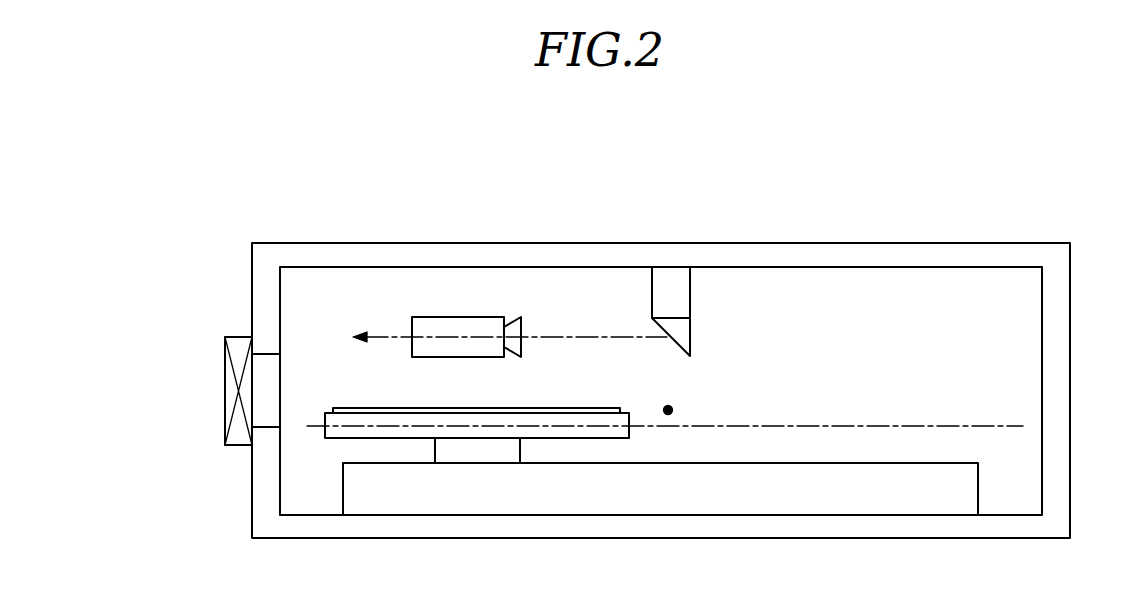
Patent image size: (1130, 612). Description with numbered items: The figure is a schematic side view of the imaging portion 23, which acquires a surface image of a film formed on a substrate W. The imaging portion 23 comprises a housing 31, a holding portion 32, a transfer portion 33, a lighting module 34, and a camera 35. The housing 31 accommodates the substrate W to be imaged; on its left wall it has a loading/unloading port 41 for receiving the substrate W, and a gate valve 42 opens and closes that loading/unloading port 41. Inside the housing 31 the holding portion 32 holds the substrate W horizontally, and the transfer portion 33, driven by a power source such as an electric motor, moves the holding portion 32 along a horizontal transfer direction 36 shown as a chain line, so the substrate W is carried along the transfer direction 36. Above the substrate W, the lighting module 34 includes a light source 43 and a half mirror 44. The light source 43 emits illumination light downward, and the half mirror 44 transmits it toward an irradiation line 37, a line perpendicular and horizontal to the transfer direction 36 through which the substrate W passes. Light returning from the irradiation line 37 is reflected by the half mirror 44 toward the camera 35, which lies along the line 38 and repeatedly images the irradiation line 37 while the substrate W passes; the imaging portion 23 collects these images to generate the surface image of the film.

The imaging portion 23 is at (990, 243).
The housing 31 is at (334, 243).
The holding portion 32 is at (392, 430).
The transfer portion 33 is at (617, 503).
The lighting module 34 is at (700, 288).
The camera 35 is at (460, 317).
The transfer direction 36 is at (968, 427).
The irradiation line 37 is at (668, 415).
The imaging axis 38 is at (562, 337).
The loading/unloading port 41 is at (268, 422).
The gate valve 42 is at (243, 447).
The light source 43 is at (668, 285).
The half mirror 44 is at (683, 333).
The substrate W is at (347, 408).